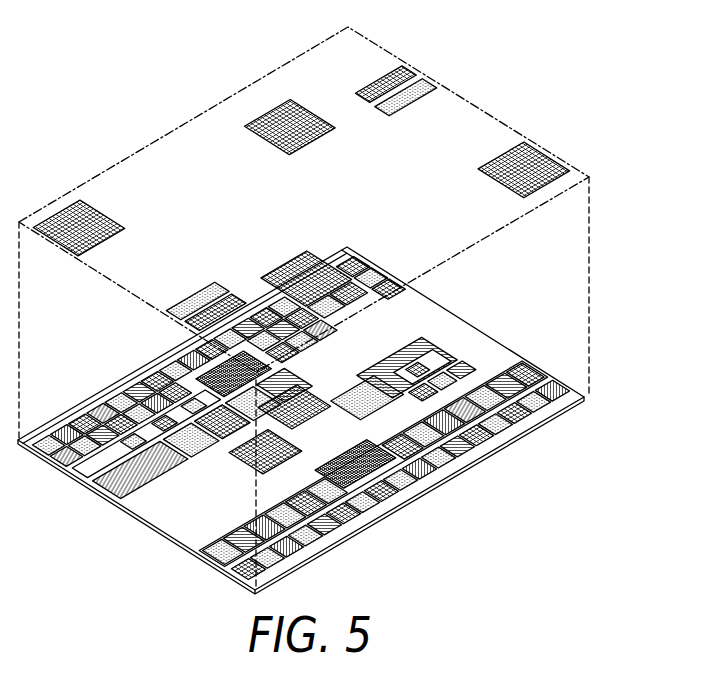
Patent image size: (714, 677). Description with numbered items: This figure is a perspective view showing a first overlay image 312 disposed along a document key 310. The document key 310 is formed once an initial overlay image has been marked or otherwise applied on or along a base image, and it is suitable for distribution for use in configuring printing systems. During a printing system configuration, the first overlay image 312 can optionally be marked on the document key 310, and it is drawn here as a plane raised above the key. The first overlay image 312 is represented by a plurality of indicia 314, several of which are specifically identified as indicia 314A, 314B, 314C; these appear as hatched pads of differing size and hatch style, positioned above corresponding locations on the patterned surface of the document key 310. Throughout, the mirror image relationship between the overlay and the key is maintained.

The document key 310 is at (432, 483).
The first overlay image 312 is at (484, 110).
The indicia 314 is at (328, 98).
The indicium 314A is at (100, 212).
The indicium 314B is at (310, 143).
The indicium 314C is at (421, 88).